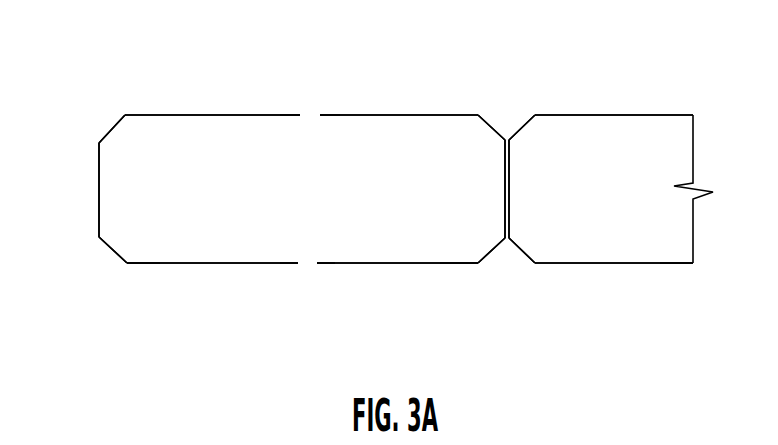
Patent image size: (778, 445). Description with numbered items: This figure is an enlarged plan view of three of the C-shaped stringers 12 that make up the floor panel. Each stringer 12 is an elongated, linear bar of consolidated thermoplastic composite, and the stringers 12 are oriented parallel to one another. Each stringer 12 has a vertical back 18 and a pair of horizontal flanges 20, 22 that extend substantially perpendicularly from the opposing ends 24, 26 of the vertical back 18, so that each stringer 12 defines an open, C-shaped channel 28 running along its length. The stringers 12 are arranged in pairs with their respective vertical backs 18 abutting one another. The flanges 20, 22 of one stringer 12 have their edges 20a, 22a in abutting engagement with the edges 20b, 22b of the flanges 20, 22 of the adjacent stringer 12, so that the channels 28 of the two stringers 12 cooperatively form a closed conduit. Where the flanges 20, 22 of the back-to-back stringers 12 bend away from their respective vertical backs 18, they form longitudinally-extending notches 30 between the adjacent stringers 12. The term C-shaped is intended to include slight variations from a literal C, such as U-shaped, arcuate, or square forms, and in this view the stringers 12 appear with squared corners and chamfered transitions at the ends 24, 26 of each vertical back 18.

The C-shaped stringer 12 is at (130, 93).
The vertical back 18 is at (99, 170).
The horizontal flange 20 is at (180, 115).
The flange edge 20a is at (300, 115).
The flange edge 20b is at (320, 115).
The horizontal flange 22 is at (170, 263).
The flange edge 22a is at (298, 263).
The flange edge 22b is at (317, 263).
The end of vertical back 24 is at (98, 140).
The end of vertical back 26 is at (99, 237).
The C-shaped channel 28 is at (145, 228).
The longitudinally-extending notch 30 is at (513, 117).